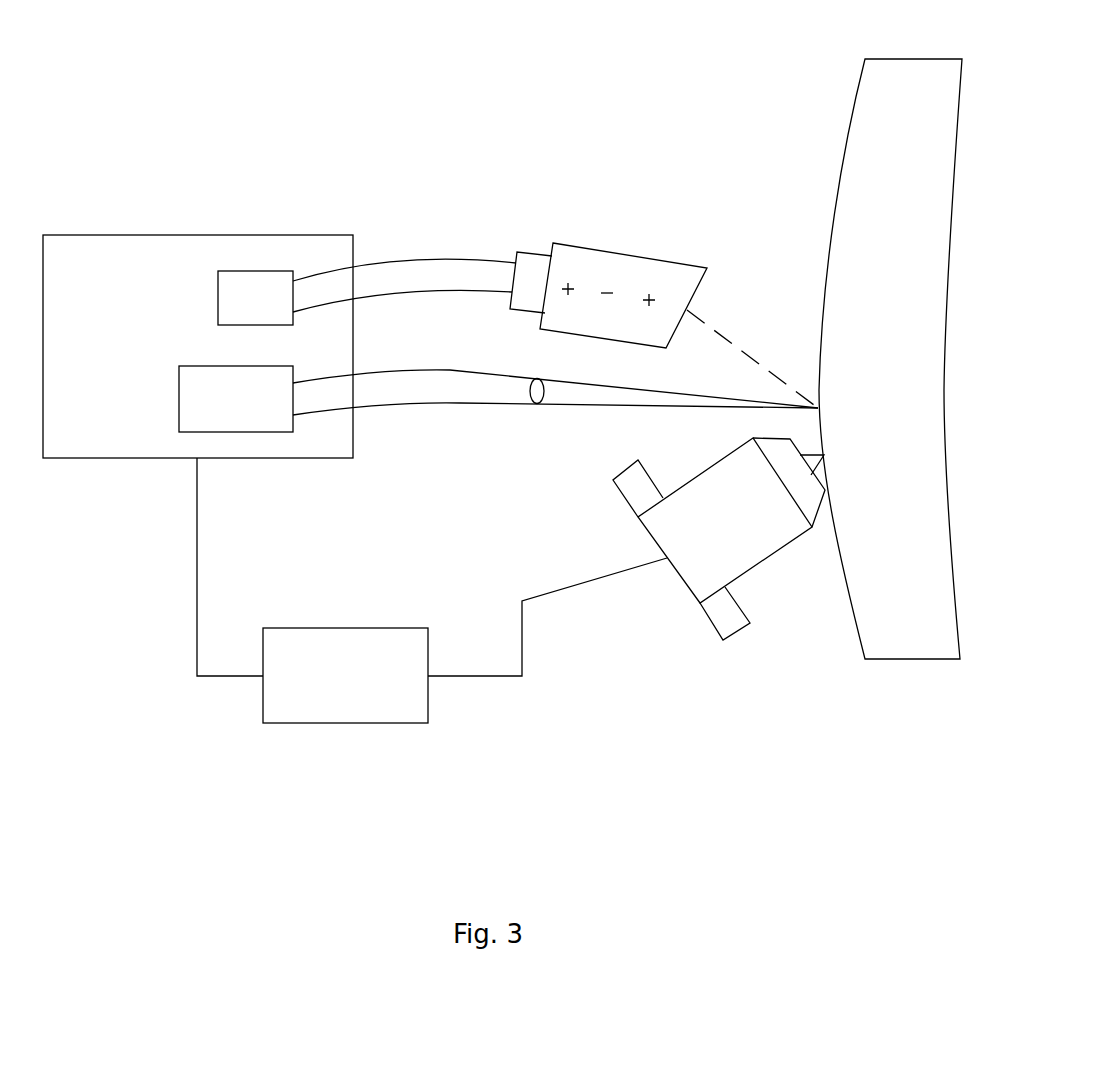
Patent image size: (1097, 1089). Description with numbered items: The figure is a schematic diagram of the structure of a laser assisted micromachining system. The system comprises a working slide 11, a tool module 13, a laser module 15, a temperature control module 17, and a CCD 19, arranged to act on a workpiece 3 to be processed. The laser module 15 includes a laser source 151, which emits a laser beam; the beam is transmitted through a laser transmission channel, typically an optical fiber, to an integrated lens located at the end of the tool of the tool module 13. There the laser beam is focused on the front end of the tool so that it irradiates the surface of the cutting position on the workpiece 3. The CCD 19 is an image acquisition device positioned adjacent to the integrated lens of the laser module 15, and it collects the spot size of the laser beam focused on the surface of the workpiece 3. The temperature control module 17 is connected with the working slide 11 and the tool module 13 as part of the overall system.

The working slide 11 is at (118, 322).
The laser source 151 is at (193, 397).
The laser module 15 is at (423, 387).
The CCD 19 is at (612, 287).
The tool module 13 is at (735, 518).
The temperature control module 17 is at (367, 723).
The workpiece 3 is at (892, 593).